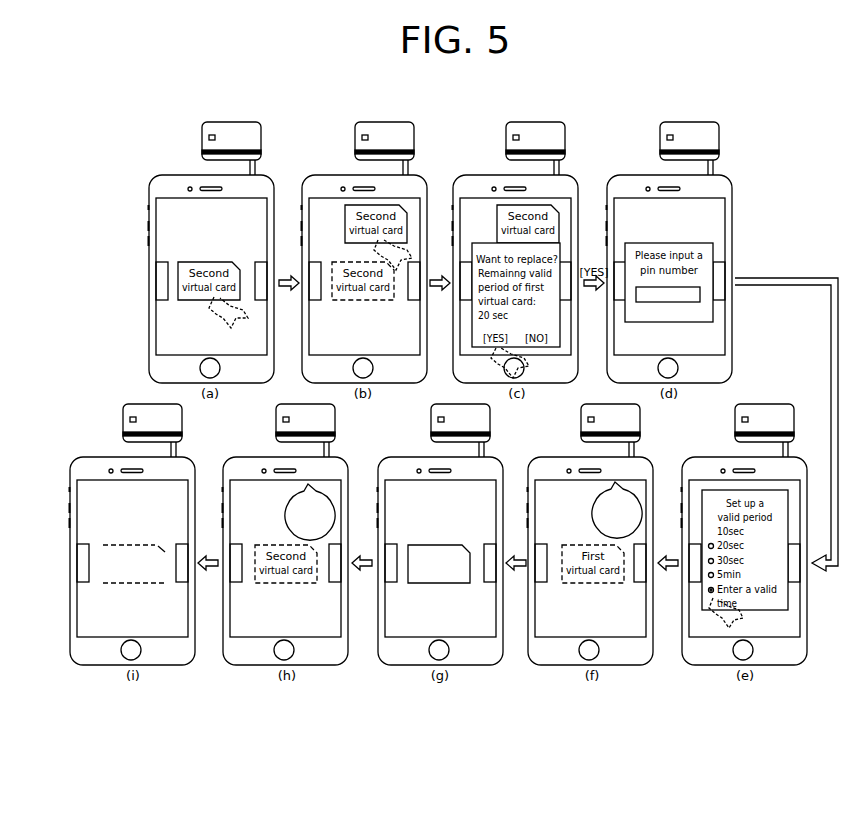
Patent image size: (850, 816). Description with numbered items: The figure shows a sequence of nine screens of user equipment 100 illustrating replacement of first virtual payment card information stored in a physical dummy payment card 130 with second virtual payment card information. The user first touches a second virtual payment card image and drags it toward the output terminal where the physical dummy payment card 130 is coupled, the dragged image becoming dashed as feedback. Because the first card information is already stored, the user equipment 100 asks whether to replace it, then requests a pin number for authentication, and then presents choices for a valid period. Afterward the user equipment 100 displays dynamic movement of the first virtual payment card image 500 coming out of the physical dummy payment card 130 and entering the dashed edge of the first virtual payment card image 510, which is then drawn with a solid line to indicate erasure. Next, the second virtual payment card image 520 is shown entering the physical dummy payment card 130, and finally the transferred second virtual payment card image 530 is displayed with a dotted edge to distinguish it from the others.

The user equipment 100 is at (267, 180).
The physical dummy payment card 130 is at (262, 138).
The first virtual payment card image 500 is at (592, 516).
The first virtual payment card image 510 is at (441, 545).
The second virtual payment card image 520 is at (285, 516).
The second virtual payment card image 530 is at (128, 545).